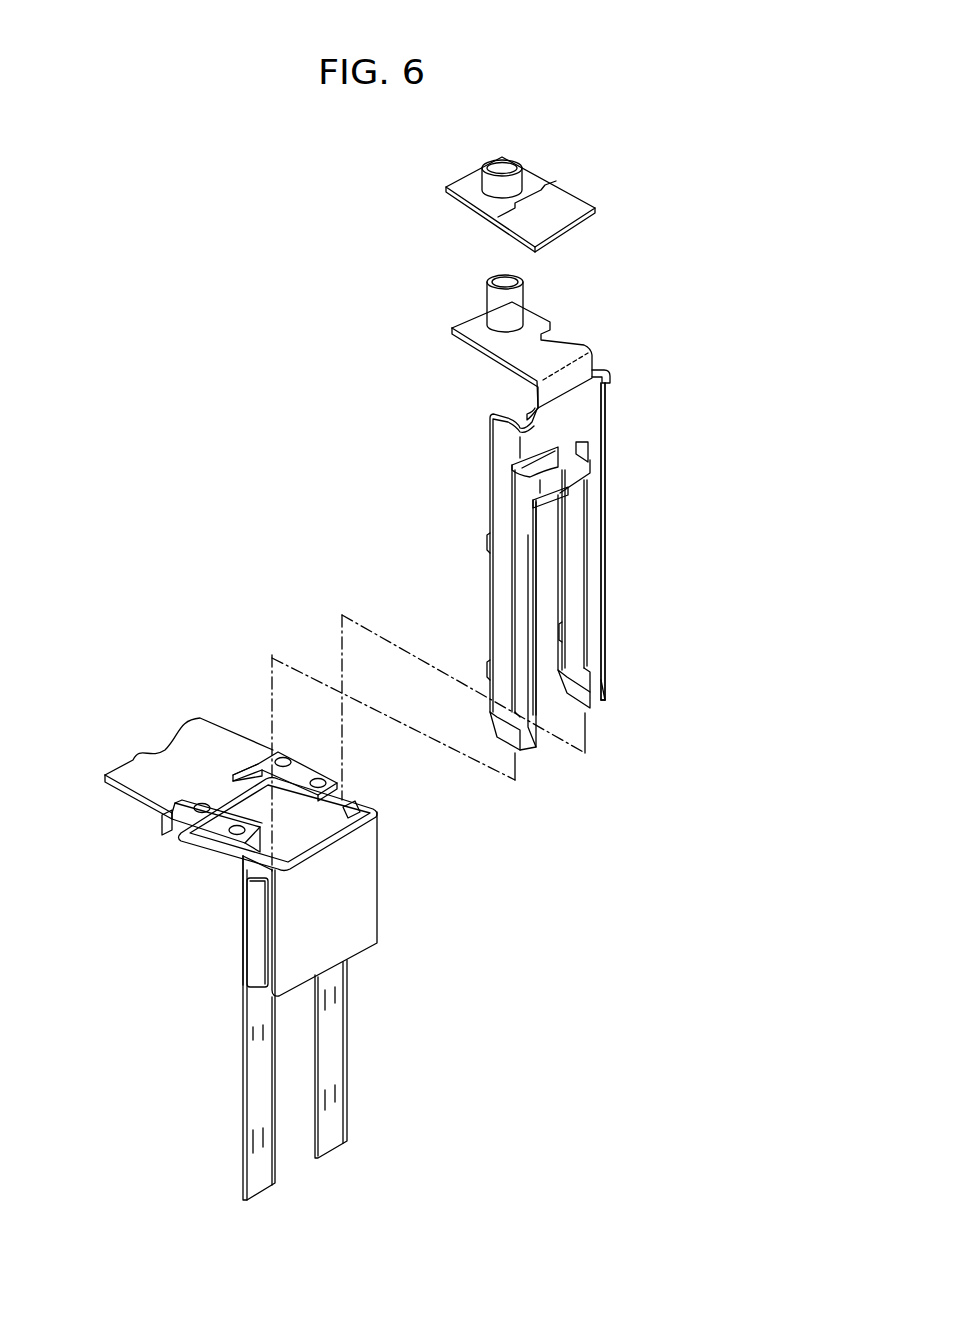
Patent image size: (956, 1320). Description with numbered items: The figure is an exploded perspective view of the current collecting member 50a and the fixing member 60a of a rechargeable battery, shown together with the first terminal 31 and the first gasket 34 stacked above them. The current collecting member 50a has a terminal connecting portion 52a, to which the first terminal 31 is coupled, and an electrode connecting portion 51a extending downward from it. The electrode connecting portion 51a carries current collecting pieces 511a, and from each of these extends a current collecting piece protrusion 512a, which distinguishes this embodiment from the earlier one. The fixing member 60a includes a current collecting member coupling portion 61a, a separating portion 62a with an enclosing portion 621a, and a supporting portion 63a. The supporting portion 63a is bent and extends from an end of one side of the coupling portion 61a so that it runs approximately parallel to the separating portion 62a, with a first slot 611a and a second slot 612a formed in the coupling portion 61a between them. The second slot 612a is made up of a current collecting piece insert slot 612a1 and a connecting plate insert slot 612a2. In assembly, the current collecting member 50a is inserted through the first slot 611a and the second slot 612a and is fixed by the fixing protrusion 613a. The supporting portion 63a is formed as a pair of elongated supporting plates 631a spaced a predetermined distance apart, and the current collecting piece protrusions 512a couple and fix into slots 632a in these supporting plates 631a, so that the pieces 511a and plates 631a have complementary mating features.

The first gasket 34 is at (533, 178).
The first terminal 31 is at (517, 298).
The current collecting member 50a is at (605, 346).
The terminal connecting portion 52a is at (573, 350).
The electrode connecting portion 51a is at (609, 525).
The current collecting pieces 511a is at (607, 567).
The current collecting piece protrusions 512a is at (559, 630).
The fixing member 60a is at (180, 711).
The current collecting member coupling portion 61a is at (140, 770).
The first slot 611a is at (250, 810).
The second slot 612a is at (365, 807).
The current collecting piece insert slot 612a1 is at (352, 792).
The connecting plate insert slot 612a2 is at (317, 830).
The fixing protrusion 613a is at (353, 810).
The separating portion 62a is at (302, 904).
The enclosing portion 621a is at (258, 925).
The supporting portion 63a is at (292, 1028).
The supporting plates 631a is at (316, 1049).
The slots 632a is at (333, 1097).